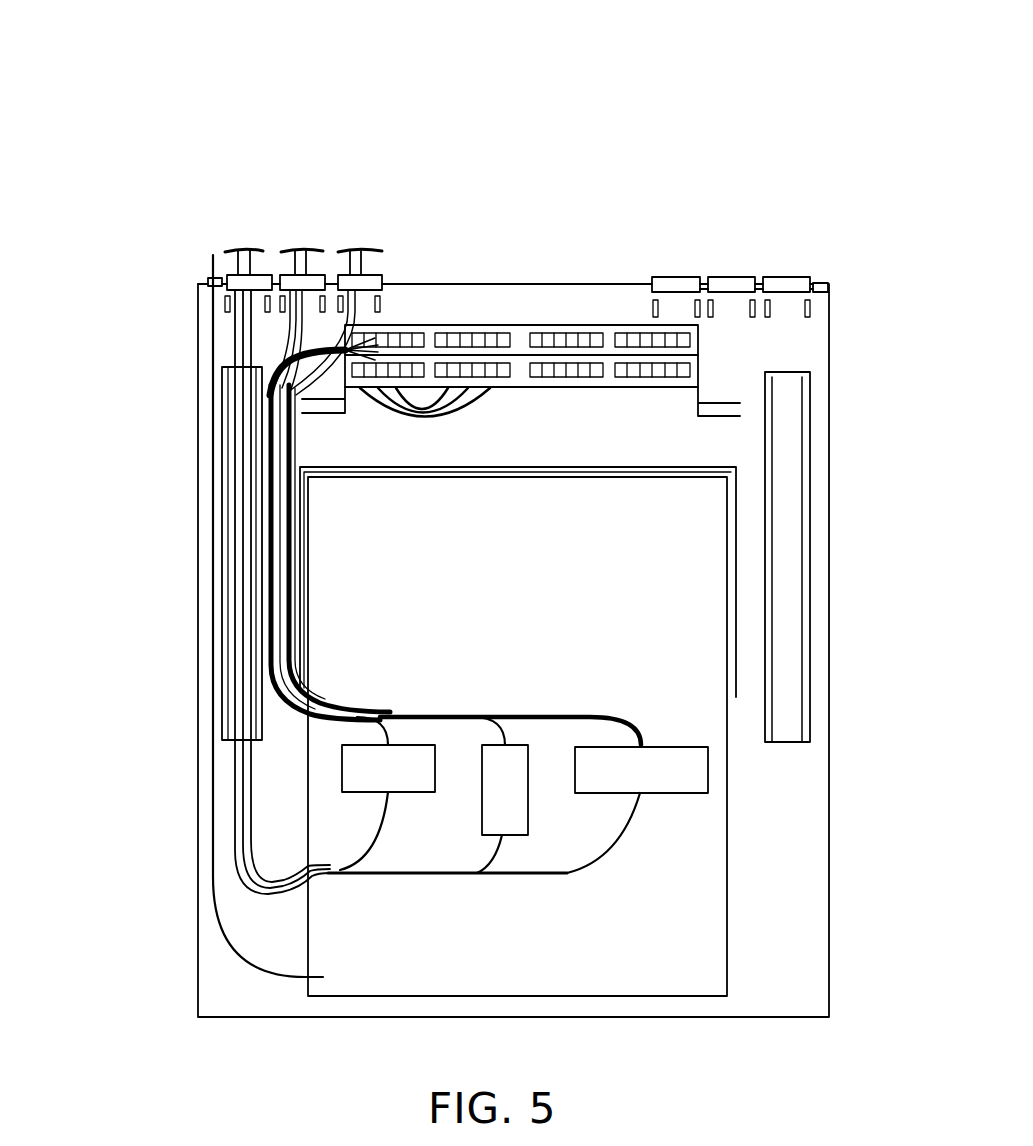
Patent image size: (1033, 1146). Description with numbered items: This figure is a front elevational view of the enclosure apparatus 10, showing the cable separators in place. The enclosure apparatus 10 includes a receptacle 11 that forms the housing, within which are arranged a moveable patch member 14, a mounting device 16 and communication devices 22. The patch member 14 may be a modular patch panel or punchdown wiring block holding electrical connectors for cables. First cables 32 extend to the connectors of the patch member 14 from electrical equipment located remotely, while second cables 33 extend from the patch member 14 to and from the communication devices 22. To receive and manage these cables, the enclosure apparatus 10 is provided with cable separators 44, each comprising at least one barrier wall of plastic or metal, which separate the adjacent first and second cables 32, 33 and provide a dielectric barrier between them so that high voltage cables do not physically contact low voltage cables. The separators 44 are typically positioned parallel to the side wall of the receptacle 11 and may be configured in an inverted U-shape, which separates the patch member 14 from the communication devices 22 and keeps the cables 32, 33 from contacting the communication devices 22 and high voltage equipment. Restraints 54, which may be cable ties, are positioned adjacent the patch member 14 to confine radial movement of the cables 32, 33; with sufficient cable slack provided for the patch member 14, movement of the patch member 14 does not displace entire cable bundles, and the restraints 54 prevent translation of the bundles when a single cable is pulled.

The enclosure apparatus 10 is at (652, 143).
The receptacle 11 is at (708, 273).
The moveable patch member 14 is at (522, 325).
The mounting device 16 is at (300, 800).
The communication devices 22 is at (688, 798).
The first cables 32 is at (247, 250).
The second cables 33 is at (452, 715).
The cable separators 44 is at (297, 525).
The restraints 54 is at (272, 400).